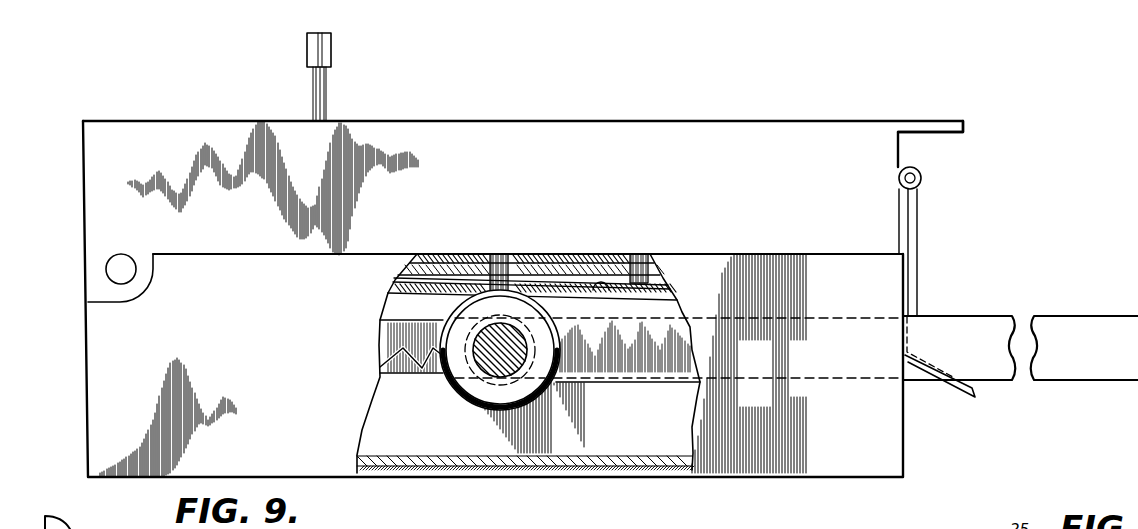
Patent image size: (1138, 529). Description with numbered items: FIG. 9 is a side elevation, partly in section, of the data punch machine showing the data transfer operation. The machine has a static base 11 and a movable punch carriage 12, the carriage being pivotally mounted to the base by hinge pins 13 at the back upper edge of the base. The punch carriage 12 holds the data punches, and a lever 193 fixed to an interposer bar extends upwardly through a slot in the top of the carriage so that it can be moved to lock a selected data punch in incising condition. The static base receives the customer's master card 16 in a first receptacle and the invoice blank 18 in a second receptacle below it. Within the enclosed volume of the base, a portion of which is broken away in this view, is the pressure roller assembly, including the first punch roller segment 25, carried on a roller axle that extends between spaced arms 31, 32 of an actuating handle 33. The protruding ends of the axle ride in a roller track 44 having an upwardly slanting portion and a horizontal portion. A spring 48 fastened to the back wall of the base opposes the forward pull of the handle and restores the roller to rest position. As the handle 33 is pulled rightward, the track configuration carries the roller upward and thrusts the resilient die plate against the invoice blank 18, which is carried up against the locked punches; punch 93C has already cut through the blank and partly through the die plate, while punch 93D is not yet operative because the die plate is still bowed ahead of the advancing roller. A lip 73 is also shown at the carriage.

The static base 11 is at (836, 451).
The punch carriage 12 is at (618, 138).
The hinge pins 13 is at (106, 267).
The master card 16 is at (593, 254).
The invoice blank 18 is at (593, 287).
The first punch roller segment 25 is at (470, 402).
The arm 31 is at (980, 327).
The arm 32 is at (626, 383).
The actuating handle 33 is at (1054, 316).
The roller track 44 is at (602, 372).
The spring 48 is at (383, 350).
The lip 73 is at (966, 122).
The punch 93C is at (495, 256).
The punch 93D is at (645, 254).
The lever 193 is at (335, 43).